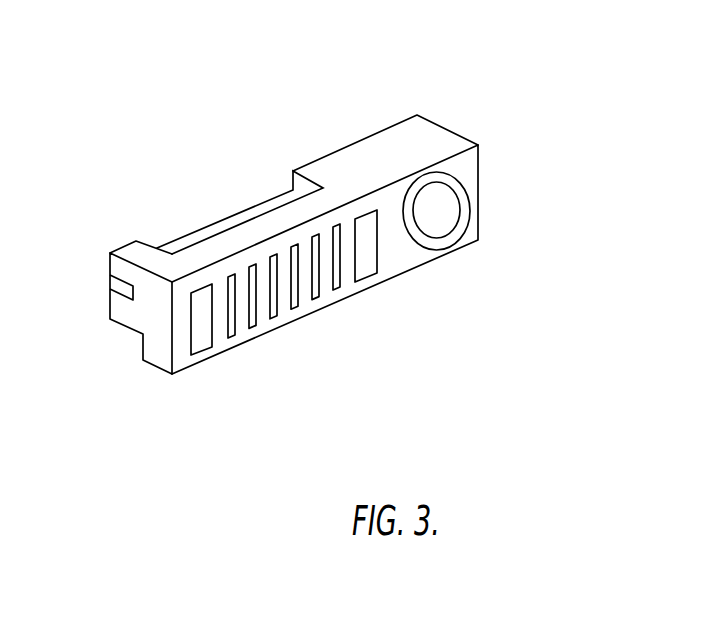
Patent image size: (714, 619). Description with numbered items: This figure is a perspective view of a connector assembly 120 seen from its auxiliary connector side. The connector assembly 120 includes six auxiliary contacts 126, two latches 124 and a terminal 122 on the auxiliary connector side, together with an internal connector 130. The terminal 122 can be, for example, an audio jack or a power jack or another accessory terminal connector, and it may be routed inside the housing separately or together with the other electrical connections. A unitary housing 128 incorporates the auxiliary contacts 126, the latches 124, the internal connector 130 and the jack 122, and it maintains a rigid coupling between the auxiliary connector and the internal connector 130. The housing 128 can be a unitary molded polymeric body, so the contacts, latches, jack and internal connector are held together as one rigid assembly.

The connector assembly 120 is at (497, 71).
The terminal 122 is at (457, 218).
The latches 124 is at (200, 338).
The auxiliary contacts 126 is at (234, 334).
The unitary housing 128 is at (140, 316).
The internal connector 130 is at (262, 200).